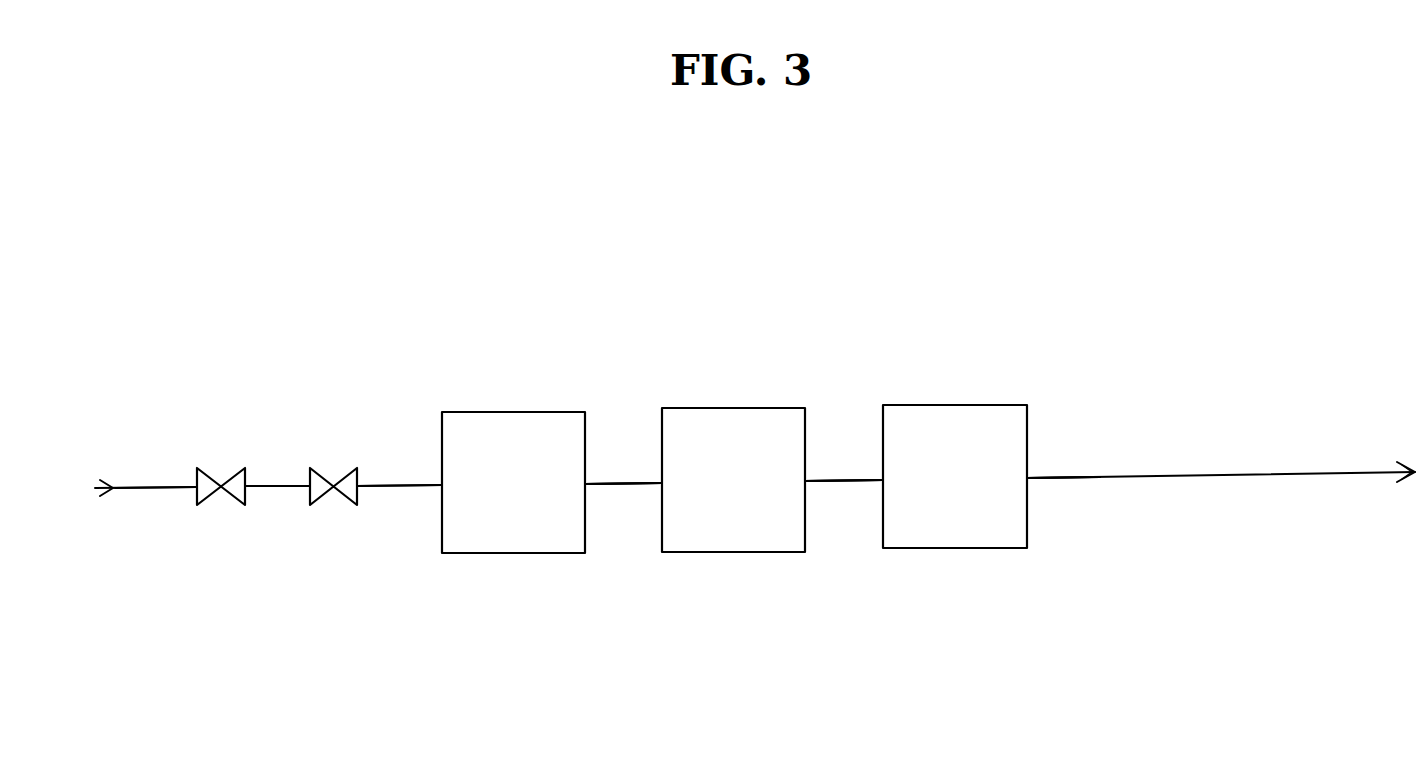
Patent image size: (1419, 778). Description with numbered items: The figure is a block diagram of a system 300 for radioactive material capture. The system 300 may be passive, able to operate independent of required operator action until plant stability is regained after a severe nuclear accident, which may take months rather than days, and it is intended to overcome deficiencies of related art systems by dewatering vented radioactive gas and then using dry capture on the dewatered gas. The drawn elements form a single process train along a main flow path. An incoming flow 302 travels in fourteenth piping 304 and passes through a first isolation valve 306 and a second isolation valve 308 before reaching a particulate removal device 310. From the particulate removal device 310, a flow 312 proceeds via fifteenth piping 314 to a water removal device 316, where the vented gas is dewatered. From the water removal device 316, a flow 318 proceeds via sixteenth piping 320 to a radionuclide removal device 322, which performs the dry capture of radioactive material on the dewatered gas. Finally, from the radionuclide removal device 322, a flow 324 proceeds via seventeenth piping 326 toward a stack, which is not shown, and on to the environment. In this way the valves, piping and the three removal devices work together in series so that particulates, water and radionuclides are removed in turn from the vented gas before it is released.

The system 300 is at (336, 633).
The flow 302 is at (131, 441).
The fourteenth piping 304 is at (150, 497).
The first isolation valve 306 is at (246, 463).
The second isolation valve 308 is at (363, 466).
The particulate removal device 310 is at (537, 500).
The flow 312 is at (631, 446).
The fifteenth piping 314 is at (625, 492).
The water removal device 316 is at (748, 498).
The flow 318 is at (853, 443).
The sixteenth piping 320 is at (850, 485).
The radionuclide removal device 322 is at (980, 496).
The flow 324 is at (1078, 439).
The seventeenth piping 326 is at (1085, 483).